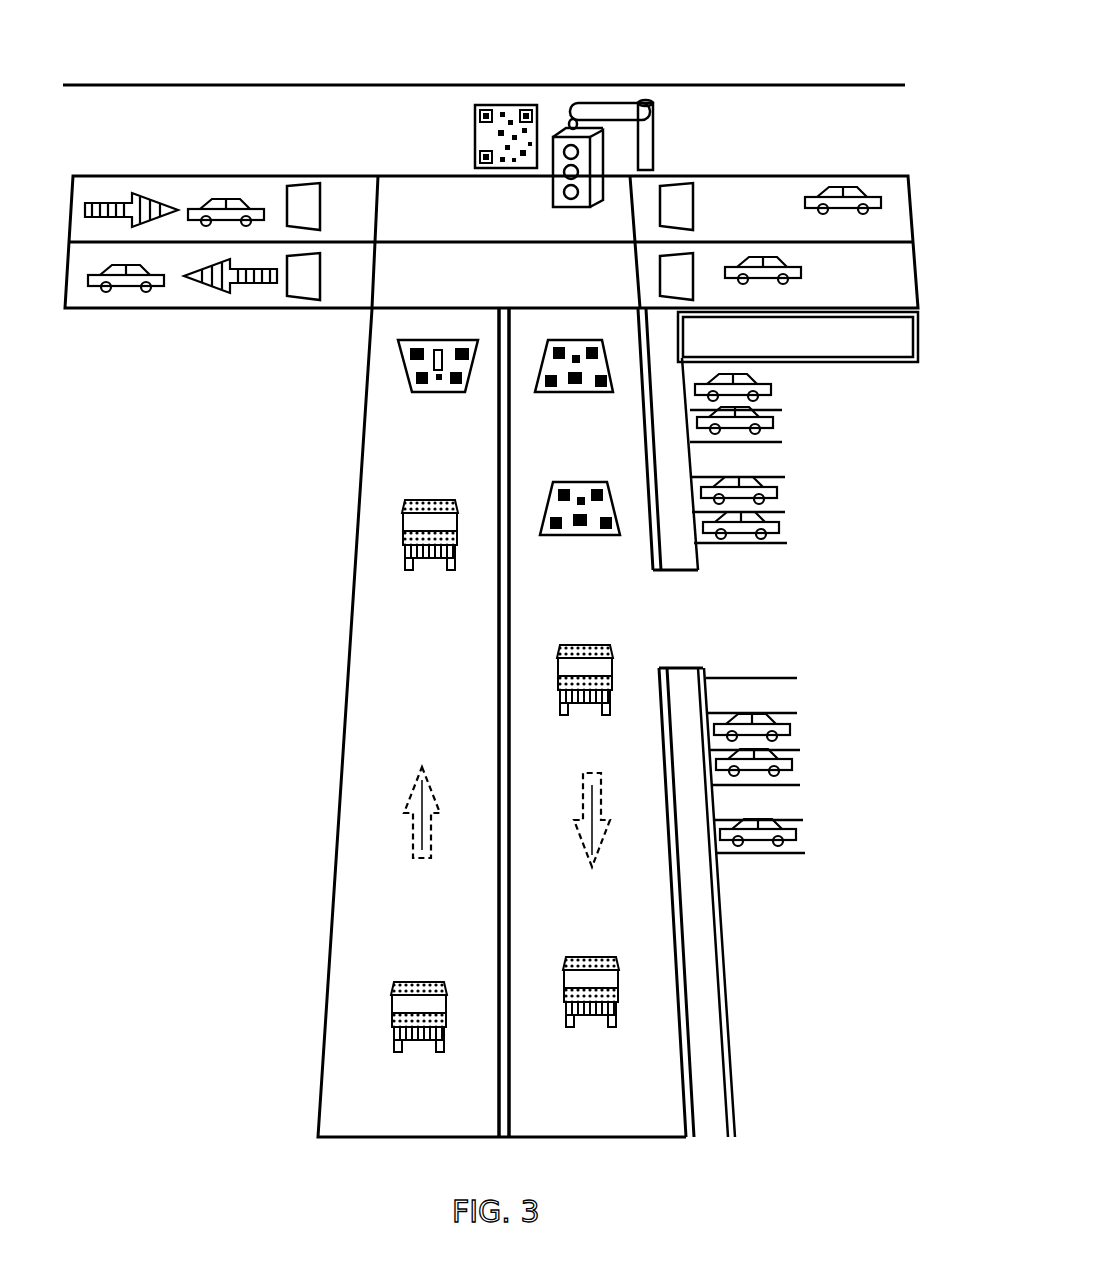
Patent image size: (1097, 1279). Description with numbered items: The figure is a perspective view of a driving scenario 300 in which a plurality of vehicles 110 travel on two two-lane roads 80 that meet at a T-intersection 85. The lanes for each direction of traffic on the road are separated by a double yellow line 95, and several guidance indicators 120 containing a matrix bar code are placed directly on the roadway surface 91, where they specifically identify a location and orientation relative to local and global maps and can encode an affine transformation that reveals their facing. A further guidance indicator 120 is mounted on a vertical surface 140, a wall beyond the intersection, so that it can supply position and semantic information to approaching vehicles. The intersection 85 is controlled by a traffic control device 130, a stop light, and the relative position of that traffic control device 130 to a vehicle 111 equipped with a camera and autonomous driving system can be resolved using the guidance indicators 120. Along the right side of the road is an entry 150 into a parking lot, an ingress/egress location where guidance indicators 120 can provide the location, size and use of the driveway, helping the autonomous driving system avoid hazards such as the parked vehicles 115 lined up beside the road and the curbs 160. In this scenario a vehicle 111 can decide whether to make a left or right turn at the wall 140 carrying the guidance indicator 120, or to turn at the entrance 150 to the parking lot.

The two-lane road 80 is at (342, 1025).
The intersection 85 is at (407, 215).
The roadway surface 91 is at (432, 1110).
The double yellow line 95 is at (496, 897).
The vehicle 110 is at (845, 196).
The vehicle with camera and autonomous driving system 111 is at (425, 523).
The parked vehicle 115 is at (770, 525).
The guidance indicator 120 is at (502, 110).
The traffic control device 130 is at (612, 112).
The vertical surface 140 is at (322, 108).
The ingress/egress location 150 is at (705, 568).
The curb 160 is at (728, 1058).
The driving scenario 300 is at (298, 750).